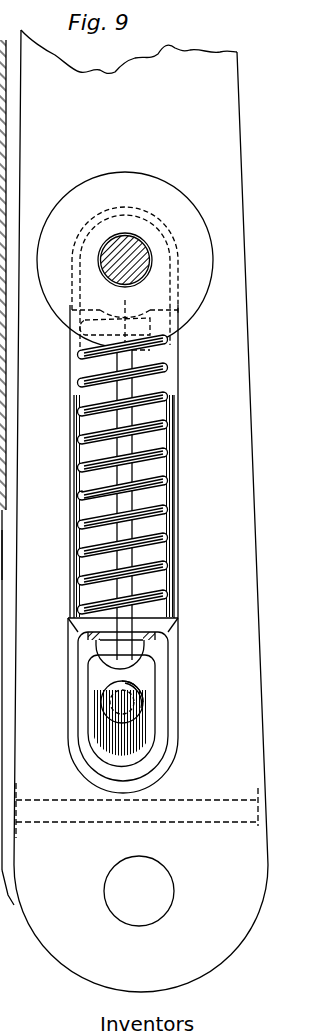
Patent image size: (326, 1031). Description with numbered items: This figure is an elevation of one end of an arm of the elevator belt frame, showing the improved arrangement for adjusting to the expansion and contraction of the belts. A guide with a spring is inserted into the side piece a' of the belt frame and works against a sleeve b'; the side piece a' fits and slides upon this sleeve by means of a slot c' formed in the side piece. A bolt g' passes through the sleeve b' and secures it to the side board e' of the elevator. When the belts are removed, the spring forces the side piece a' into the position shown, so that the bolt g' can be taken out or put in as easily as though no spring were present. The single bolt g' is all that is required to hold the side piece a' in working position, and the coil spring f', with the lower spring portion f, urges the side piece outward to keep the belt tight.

The side piece a' is at (141, 511).
The bolt g' is at (125, 260).
The slot c' is at (124, 461).
The coil spring f' is at (141, 474).
The side board e' is at (8, 555).
The sleeve b' is at (129, 810).
The spring f is at (7, 888).